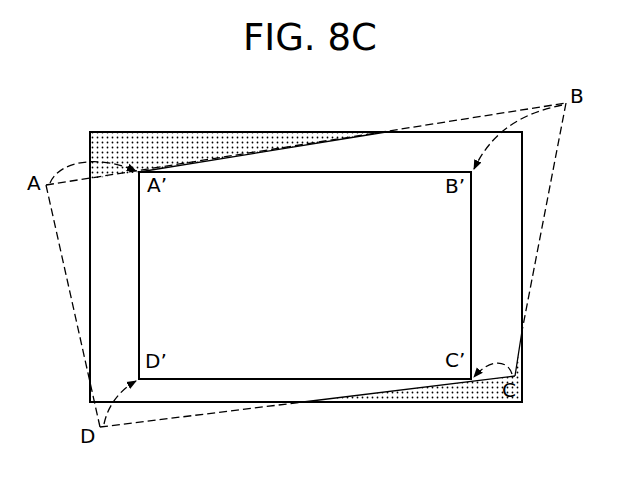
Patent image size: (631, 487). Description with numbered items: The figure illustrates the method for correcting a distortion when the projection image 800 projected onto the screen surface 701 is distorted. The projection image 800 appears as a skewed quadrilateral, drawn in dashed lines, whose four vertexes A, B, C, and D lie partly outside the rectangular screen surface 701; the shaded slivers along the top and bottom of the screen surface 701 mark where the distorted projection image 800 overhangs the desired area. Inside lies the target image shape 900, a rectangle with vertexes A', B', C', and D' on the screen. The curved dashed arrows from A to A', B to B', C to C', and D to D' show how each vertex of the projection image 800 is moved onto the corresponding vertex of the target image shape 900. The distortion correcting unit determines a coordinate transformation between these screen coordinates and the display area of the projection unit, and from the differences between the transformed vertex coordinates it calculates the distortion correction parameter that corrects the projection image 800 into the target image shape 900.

The screen surface 701 is at (195, 132).
The target image shape 900 is at (333, 172).
The projection image 800 is at (463, 120).